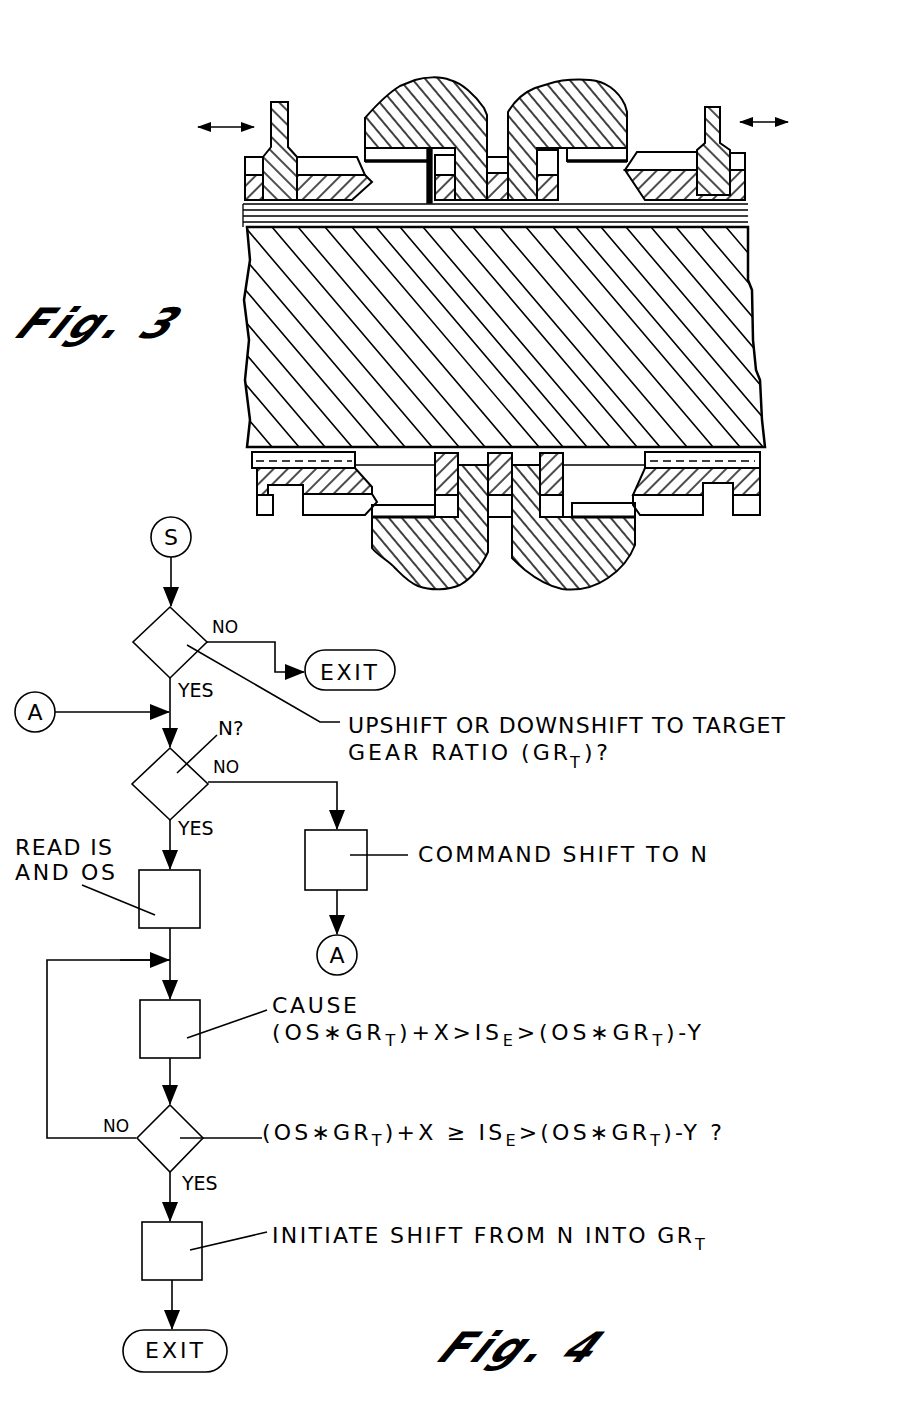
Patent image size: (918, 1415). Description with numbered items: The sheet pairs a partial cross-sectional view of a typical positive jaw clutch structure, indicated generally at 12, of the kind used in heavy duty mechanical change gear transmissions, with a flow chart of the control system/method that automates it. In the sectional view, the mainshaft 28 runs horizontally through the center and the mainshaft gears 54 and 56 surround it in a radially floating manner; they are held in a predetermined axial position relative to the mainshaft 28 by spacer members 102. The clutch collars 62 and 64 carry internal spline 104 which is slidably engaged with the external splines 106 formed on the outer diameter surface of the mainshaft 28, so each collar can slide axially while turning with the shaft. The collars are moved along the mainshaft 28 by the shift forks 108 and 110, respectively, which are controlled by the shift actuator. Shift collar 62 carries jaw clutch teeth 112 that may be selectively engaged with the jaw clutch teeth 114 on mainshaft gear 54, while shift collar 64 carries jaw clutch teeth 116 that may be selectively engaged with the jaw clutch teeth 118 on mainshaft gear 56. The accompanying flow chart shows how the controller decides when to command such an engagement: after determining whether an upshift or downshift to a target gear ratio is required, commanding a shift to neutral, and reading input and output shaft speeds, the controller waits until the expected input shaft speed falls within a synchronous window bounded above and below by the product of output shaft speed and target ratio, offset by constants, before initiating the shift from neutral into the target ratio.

The synchronizer assembly 12 is at (724, 81).
The mainshaft 28 is at (475, 325).
The mainshaft gear 54 is at (463, 83).
The mainshaft gear 56 is at (599, 89).
The clutch collar 62 is at (342, 519).
The clutch collar 64 is at (690, 519).
The spacer members 102 is at (548, 200).
The internal spline 104 is at (260, 460).
The external splines 106 is at (590, 462).
The shift fork 108 is at (263, 110).
The shift fork 110 is at (723, 115).
The jaw clutch teeth 112 is at (323, 158).
The jaw clutch teeth 114 is at (393, 163).
The jaw clutch teeth 116 is at (662, 156).
The jaw clutch teeth 118 is at (605, 164).